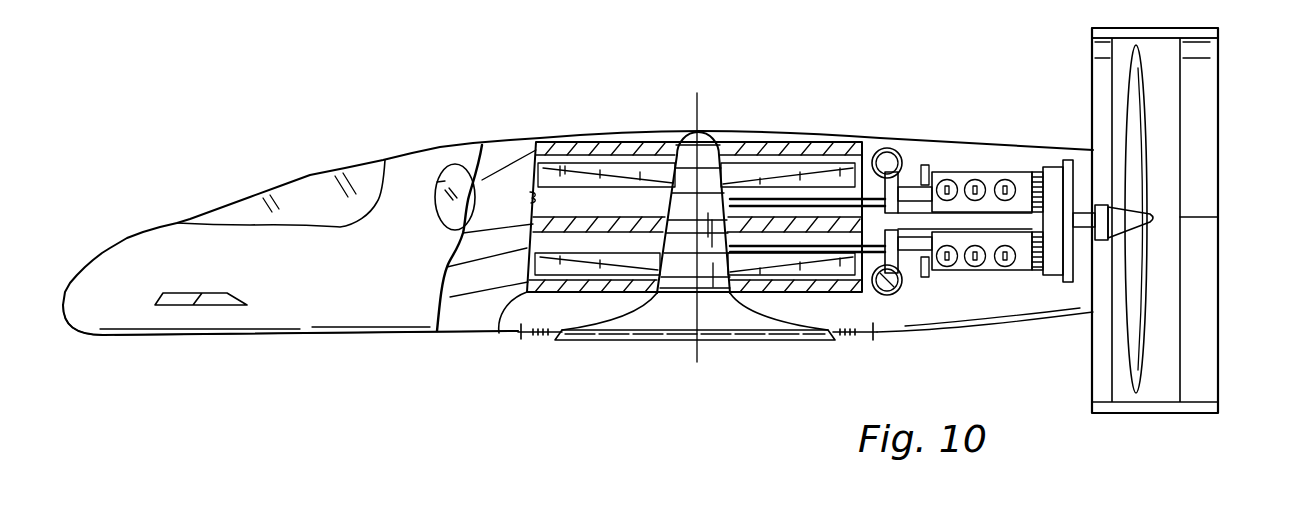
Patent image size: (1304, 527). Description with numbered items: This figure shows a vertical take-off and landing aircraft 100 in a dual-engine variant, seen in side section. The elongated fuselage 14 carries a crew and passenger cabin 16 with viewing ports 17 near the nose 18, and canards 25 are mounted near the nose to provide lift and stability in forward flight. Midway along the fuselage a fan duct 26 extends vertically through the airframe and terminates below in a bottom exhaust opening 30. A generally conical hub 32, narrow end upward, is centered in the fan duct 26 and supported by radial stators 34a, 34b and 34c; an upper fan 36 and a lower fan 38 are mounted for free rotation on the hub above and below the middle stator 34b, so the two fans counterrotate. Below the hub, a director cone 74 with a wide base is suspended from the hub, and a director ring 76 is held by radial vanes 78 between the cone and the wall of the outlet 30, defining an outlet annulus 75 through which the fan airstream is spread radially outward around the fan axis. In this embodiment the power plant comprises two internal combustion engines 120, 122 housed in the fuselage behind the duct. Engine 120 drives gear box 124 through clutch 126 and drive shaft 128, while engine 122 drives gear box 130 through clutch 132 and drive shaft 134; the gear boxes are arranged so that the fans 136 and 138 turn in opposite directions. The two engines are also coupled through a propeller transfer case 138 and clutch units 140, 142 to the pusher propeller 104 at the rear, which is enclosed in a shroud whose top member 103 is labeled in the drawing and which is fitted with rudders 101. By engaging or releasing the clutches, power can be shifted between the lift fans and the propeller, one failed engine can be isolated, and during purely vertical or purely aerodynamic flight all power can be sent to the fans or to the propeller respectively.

The aircraft 100 is at (522, 108).
The crew and passenger cabin 16 is at (298, 187).
The viewing ports 17 is at (450, 163).
The fan duct 26 is at (533, 200).
The radial stator 34a is at (437, 182).
The middle stator 34b is at (447, 242).
The radial stator 34c is at (450, 297).
The lower fan 38 is at (447, 267).
The nose 18 is at (65, 335).
The canards 25 is at (212, 307).
The fuselage 14 is at (408, 333).
The conical hub 32 is at (727, 150).
The upper fan 36 is at (553, 170).
The upper fan 136 is at (707, 222).
The gear box 124 is at (680, 202).
The gear box 130 is at (625, 294).
The director cone 74 is at (683, 340).
The radial vanes 78 is at (553, 343).
The director ring 76 is at (518, 340).
The outlet annulus 75 is at (544, 346).
The bottom exhaust opening 30 is at (499, 333).
The drive shaft 128 is at (863, 140).
The drive shaft 134 is at (892, 288).
The clutch 126 is at (890, 150).
The clutch 132 is at (898, 286).
The internal combustion engine 120 is at (988, 172).
The internal combustion engine 122 is at (993, 272).
The clutch unit 140 is at (1037, 167).
The clutch unit 142 is at (1033, 272).
The propeller transfer case 138 is at (1053, 167).
The rudders 101 is at (1213, 182).
The frame top member 103 is at (1178, 28).
The pusher propeller 104 is at (1148, 100).